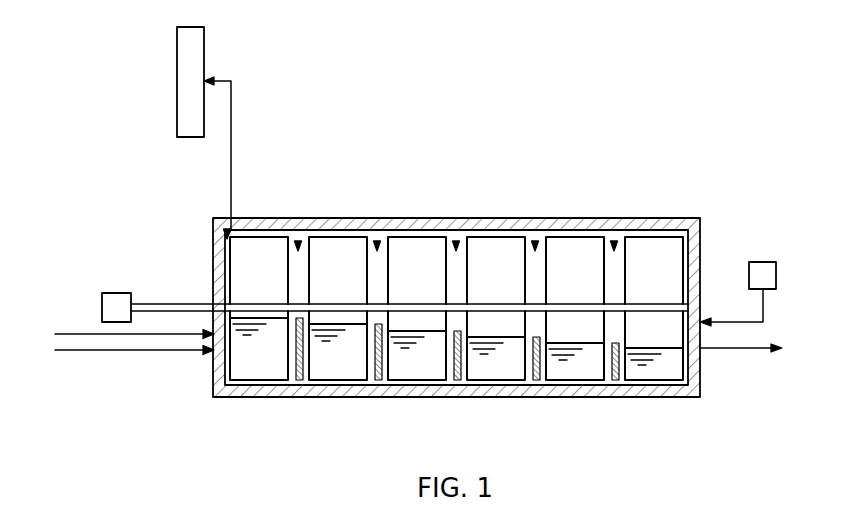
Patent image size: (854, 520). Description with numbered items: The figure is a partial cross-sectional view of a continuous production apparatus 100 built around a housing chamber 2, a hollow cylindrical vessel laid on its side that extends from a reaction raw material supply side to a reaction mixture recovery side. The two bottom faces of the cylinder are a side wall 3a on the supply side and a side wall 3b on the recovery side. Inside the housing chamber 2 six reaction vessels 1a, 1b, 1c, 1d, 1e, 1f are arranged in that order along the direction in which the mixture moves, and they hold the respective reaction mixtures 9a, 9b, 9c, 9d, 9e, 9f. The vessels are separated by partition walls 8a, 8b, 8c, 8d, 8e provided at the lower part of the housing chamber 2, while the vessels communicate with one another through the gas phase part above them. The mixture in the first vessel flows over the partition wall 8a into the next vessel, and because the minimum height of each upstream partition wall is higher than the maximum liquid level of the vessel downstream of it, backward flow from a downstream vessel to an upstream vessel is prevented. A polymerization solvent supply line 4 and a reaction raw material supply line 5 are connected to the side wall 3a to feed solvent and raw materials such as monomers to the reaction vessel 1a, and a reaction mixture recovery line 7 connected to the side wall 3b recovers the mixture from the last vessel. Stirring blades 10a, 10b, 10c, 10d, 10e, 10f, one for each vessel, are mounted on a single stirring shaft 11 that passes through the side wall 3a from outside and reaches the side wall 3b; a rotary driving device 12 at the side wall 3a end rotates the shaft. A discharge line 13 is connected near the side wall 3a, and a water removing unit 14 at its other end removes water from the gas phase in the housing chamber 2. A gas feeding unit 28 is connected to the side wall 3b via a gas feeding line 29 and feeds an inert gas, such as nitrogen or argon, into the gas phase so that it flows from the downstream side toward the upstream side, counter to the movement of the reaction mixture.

The continuous production apparatus 100 is at (484, 84).
The housing chamber 2 is at (702, 212).
The side wall 3a is at (214, 236).
The side wall 3b is at (702, 372).
The reaction vessel 1a is at (224, 228).
The reaction vessel 1b is at (298, 242).
The reaction vessel 1c is at (377, 242).
The reaction vessel 1d is at (456, 242).
The reaction vessel 1e is at (535, 242).
The reaction vessel 1f is at (614, 242).
The stirring blade 10a is at (267, 248).
The stirring blade 10b is at (345, 248).
The stirring blade 10c is at (424, 248).
The stirring blade 10d is at (502, 248).
The stirring blade 10e is at (580, 248).
The stirring blade 10f is at (659, 248).
The reaction mixture 9a is at (230, 386).
The reaction mixture 9b is at (310, 386).
The reaction mixture 9c is at (387, 386).
The reaction mixture 9d is at (467, 386).
The reaction mixture 9e is at (546, 386).
The reaction mixture 9f is at (625, 386).
The partition wall 8a is at (296, 352).
The partition wall 8b is at (375, 358).
The partition wall 8c is at (454, 365).
The partition wall 8d is at (533, 371).
The partition wall 8e is at (612, 377).
The stirring shaft 11 is at (170, 303).
The rotary driving device 12 is at (116, 292).
The discharge line 13 is at (232, 120).
The water removing unit 14 is at (205, 45).
The polymerization solvent supply line 4 is at (62, 333).
The reaction raw material supply line 5 is at (62, 349).
The reaction mixture recovery line 7 is at (760, 352).
The gas feeding unit 28 is at (764, 262).
The gas feeding line 29 is at (766, 314).